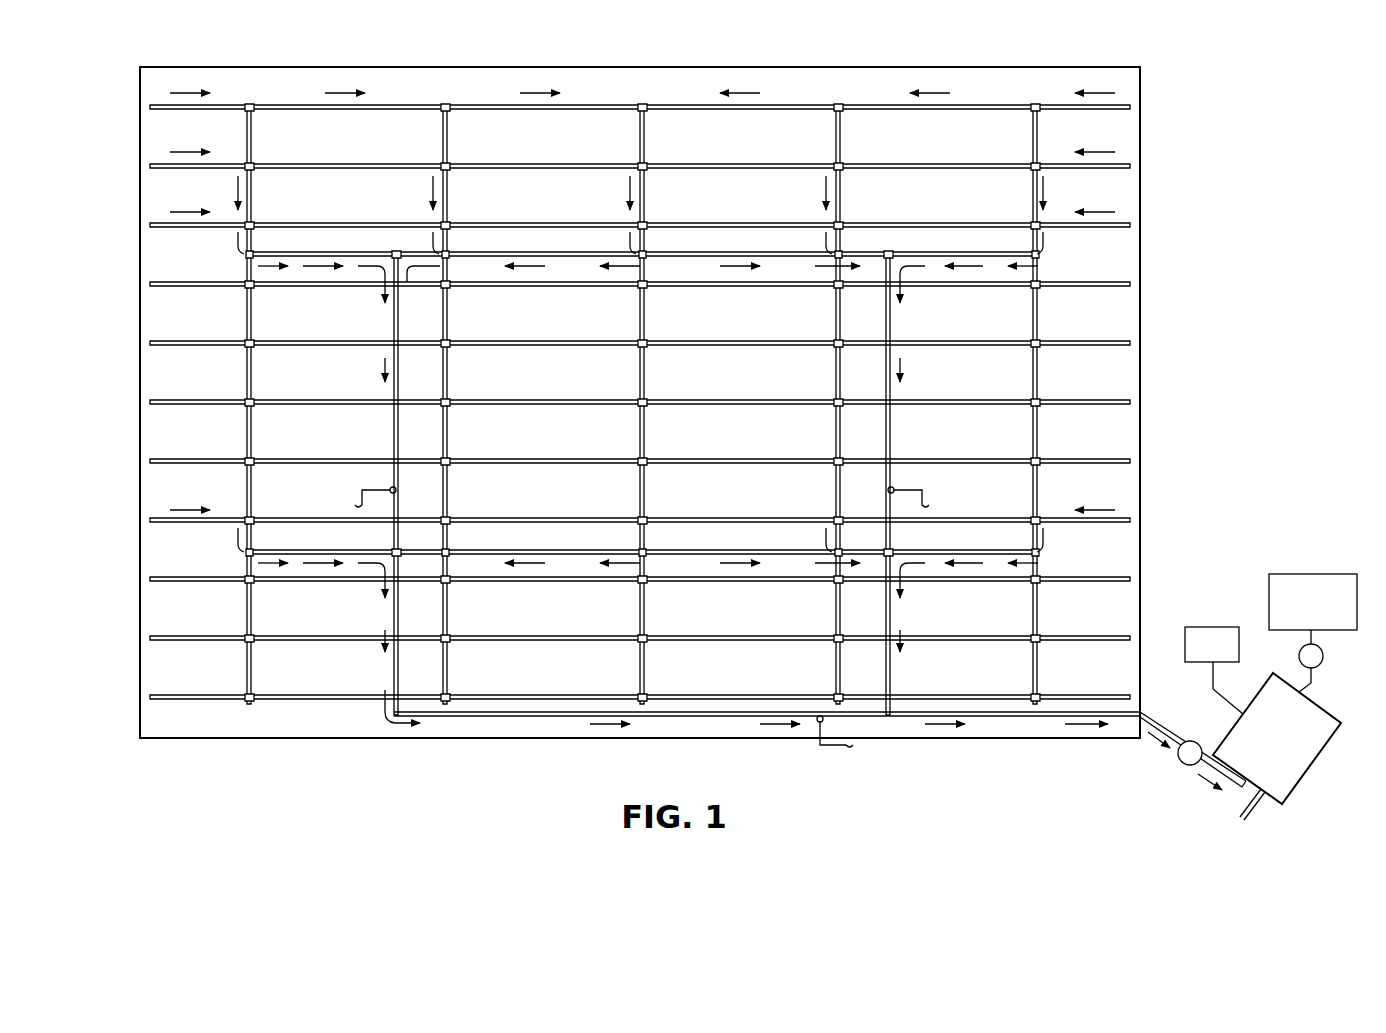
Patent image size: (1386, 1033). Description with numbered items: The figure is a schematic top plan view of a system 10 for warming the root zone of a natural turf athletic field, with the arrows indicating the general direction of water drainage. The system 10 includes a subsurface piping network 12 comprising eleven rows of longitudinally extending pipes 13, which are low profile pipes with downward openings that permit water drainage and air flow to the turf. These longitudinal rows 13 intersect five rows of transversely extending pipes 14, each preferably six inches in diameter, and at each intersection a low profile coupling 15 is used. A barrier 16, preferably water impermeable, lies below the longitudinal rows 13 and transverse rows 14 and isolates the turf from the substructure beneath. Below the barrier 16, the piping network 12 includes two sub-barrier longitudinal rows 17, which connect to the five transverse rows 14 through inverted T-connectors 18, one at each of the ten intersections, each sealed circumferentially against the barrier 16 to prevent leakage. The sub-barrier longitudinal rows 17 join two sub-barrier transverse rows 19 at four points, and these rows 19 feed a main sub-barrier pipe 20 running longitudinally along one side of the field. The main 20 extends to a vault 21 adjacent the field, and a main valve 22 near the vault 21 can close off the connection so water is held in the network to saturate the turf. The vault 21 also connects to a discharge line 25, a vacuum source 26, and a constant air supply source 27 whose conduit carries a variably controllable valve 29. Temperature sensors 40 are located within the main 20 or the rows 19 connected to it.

The system 10 is at (731, 437).
The subsurface piping network 12 is at (622, 408).
The rows of longitudinally extending pipes 13 is at (160, 109).
The transversely extending pipes 14 is at (1033, 131).
The low profile coupling 15 is at (816, 668).
The barrier 16 is at (861, 76).
The sub-barrier longitudinal rows 17 is at (762, 250).
The inverted T-connector 18 is at (1069, 596).
The sub-barrier transverse rows 19 is at (394, 433).
The main sub-barrier pipe 20 is at (712, 725).
The vault 21 is at (1305, 760).
The main valve 22 is at (1181, 771).
The discharge line 25 is at (1255, 810).
The vacuum source 26 is at (1214, 627).
The constant air supply source 27 is at (1304, 573).
The variably controllable valve 29 is at (1323, 663).
The temperature sensors 40 is at (399, 489).